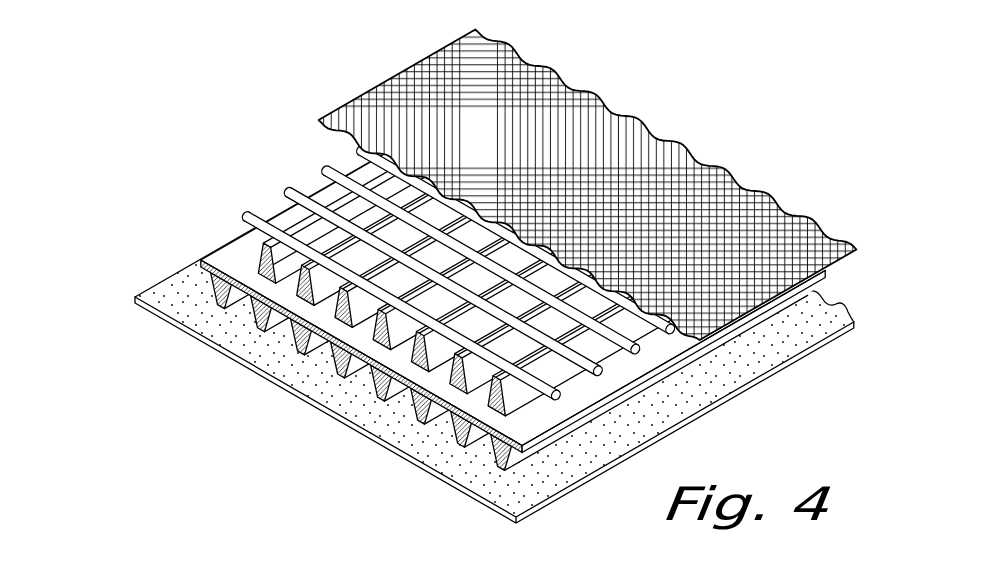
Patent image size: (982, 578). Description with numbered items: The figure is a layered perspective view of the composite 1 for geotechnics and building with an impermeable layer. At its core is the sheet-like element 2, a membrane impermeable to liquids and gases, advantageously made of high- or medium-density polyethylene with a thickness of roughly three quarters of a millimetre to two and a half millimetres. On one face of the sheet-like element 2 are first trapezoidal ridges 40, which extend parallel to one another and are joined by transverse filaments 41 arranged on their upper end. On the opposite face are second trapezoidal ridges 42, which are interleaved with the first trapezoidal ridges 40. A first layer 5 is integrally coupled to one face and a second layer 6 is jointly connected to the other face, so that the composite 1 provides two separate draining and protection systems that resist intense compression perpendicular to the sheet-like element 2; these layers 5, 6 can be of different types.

The composite 1 is at (192, 103).
The sheet-like element 2 is at (221, 257).
The first layer 5 is at (380, 97).
The second layer 6 is at (160, 289).
The first trapezoidal ridges 40 is at (262, 266).
The transverse filaments 41 is at (285, 207).
The second trapezoidal ridges 42 is at (212, 312).